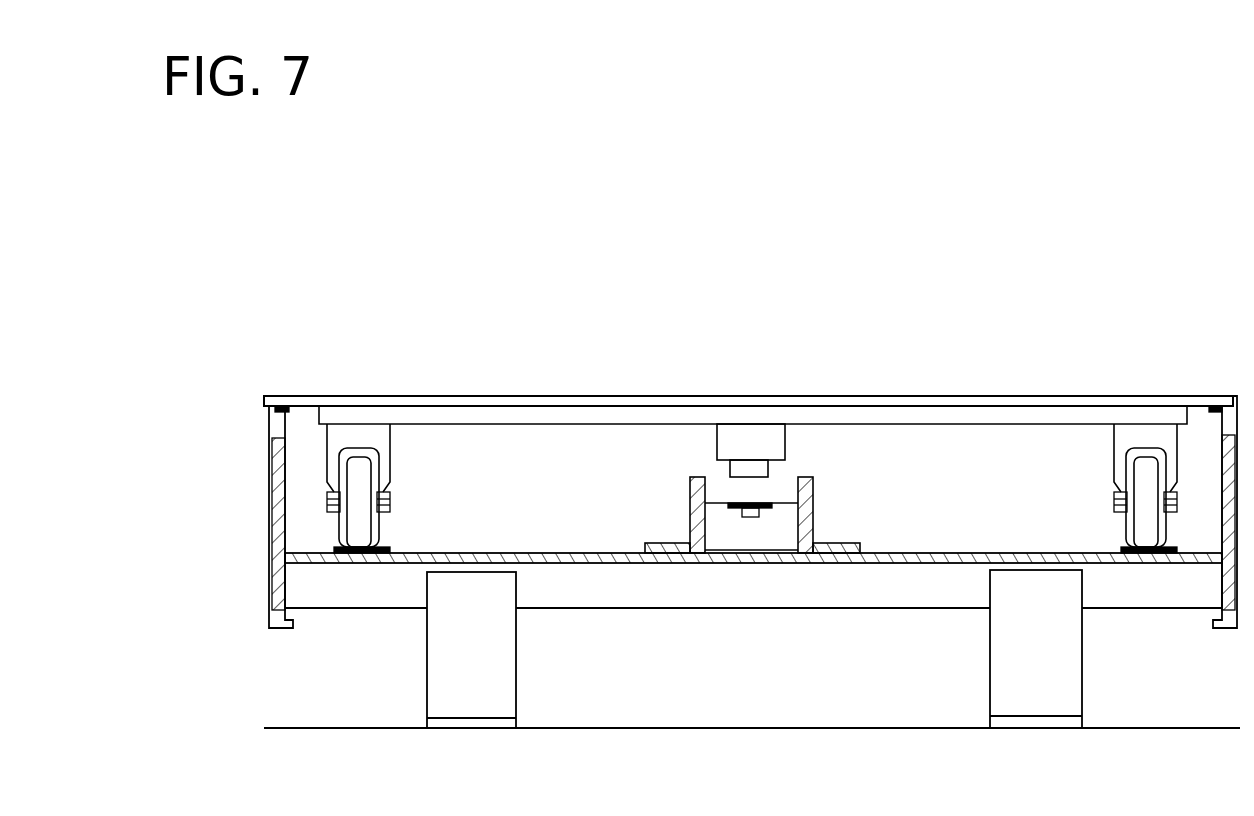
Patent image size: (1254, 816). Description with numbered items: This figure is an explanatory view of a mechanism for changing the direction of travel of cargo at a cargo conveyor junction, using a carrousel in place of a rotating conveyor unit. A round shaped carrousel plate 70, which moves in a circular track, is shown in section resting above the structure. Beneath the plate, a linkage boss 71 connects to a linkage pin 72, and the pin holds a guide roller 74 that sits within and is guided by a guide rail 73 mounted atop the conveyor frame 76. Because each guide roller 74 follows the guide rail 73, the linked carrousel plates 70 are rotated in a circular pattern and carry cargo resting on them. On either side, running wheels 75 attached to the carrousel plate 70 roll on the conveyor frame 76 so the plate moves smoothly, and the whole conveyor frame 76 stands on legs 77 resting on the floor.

The carrousel plate 70 is at (545, 415).
The linkage boss 71 is at (722, 443).
The linkage pin 72 is at (766, 470).
The guide rail 73 is at (812, 512).
The guide roller 74 is at (783, 485).
The running wheel 75 is at (388, 450).
The conveyor frame 76 is at (605, 592).
The leg 77 is at (1000, 668).